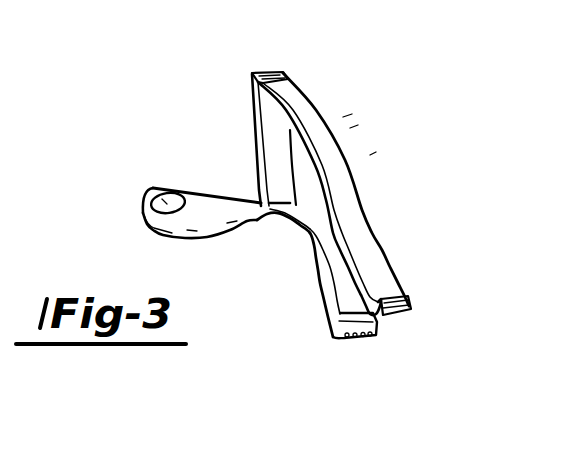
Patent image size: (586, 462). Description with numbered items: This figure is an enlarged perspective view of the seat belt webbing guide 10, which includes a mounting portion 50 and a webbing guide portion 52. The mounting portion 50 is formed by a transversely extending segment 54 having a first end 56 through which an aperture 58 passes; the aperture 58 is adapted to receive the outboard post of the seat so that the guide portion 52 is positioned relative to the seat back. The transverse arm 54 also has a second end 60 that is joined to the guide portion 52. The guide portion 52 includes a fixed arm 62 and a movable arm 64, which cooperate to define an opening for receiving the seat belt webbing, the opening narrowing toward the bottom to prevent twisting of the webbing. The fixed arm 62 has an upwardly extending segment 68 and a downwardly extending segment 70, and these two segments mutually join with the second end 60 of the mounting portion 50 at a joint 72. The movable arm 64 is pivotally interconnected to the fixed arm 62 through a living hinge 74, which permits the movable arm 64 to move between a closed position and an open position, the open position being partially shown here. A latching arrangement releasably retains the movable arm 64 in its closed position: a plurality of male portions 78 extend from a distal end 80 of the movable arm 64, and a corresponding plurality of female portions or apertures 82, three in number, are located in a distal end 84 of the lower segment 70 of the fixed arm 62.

The seat belt webbing guide 10 is at (400, 126).
The mounting portion 50 is at (212, 240).
The webbing guide portion 52 is at (308, 77).
The transversely extending segment 54 is at (216, 194).
The first end 56 is at (143, 215).
The aperture 58 is at (162, 196).
The second end 60 is at (255, 223).
The fixed arm 62 is at (313, 294).
The movable arm 64 is at (340, 137).
The upwardly extending segment 68 is at (250, 107).
The downwardly extending segment 70 is at (315, 263).
The joint 72 is at (297, 200).
The living hinge 74 is at (253, 72).
The male portions 78 is at (378, 296).
The distal end 80 is at (410, 311).
The female portions or apertures 82 is at (382, 338).
The distal end 84 is at (338, 336).